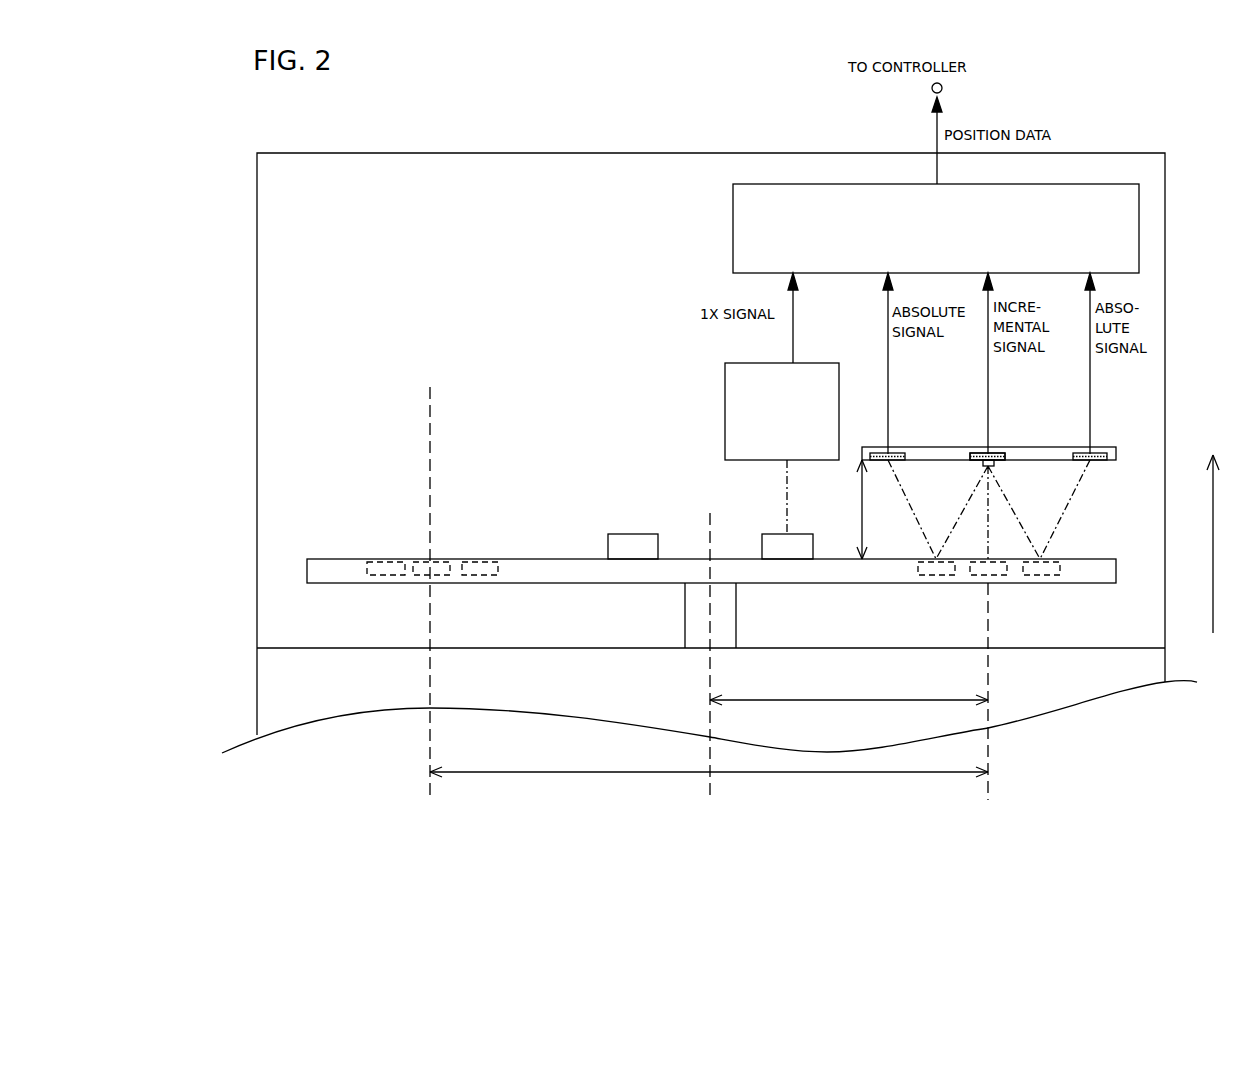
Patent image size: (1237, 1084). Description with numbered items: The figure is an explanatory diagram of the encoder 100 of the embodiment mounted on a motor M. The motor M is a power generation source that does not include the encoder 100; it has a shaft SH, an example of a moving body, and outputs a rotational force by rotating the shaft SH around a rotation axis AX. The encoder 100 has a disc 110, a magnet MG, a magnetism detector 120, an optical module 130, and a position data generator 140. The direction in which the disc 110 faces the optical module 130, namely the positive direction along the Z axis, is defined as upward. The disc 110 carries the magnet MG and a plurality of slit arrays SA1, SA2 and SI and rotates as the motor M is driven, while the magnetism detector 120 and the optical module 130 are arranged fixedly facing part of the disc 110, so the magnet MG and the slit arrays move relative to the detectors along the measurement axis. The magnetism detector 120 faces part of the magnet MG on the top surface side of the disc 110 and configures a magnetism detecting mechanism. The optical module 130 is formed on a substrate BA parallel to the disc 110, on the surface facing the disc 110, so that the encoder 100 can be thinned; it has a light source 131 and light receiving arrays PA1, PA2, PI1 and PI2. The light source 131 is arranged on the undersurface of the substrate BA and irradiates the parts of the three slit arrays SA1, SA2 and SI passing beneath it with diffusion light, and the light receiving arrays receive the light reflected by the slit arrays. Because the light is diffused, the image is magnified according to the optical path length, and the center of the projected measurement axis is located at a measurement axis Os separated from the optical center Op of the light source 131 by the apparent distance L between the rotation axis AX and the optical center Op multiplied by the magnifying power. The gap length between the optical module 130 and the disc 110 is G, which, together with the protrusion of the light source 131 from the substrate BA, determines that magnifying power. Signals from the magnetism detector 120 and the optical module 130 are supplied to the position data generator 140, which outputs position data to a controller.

The encoder 100 is at (577, 153).
The disc 110 is at (713, 590).
The magnetism detector 120 is at (725, 404).
The optical module 130 is at (994, 429).
The light source 131 is at (988, 468).
The position data generator 140 is at (1090, 184).
The substrate BA is at (1110, 462).
The light receiving array PA1 is at (880, 453).
The light receiving array PA2 is at (1073, 453).
The light receiving array PI1 is at (970, 453).
The light receiving array PI2 is at (987, 456).
The slit array SA1 is at (937, 575).
The slit array SA2 is at (1042, 575).
The slit array SI is at (990, 575).
The shaft SH is at (736, 617).
The magnet MG is at (628, 534).
The rotation center O is at (709, 559).
The gap length G is at (855, 509).
The distance L is at (849, 711).
The motor M is at (358, 707).
The measurement axis Os is at (427, 603).
The rotation axis AX is at (705, 668).
The optical center Op is at (990, 703).
The Z axis Z is at (1212, 533).